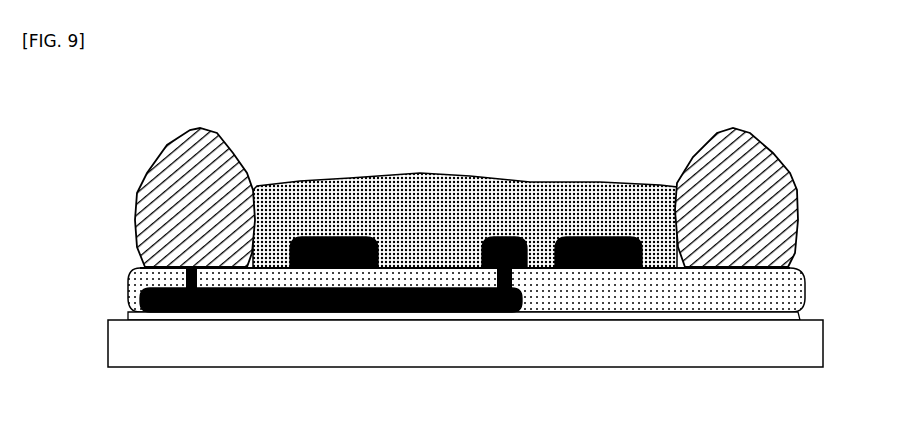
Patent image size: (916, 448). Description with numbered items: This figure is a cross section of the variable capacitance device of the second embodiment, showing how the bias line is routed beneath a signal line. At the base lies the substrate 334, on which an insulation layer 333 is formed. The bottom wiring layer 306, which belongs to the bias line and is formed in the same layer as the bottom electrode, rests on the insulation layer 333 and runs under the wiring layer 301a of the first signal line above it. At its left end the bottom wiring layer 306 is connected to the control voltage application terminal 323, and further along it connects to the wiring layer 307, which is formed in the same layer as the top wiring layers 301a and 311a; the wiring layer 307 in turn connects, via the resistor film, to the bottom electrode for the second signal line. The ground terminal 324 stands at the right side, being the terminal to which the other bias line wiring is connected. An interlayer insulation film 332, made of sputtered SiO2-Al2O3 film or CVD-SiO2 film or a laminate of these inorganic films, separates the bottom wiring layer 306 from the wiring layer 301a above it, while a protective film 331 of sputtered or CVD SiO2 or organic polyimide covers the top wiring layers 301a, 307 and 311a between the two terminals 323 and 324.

The control voltage application terminal 323 is at (162, 165).
The ground terminal 324 is at (786, 162).
The protective film 331 is at (405, 190).
The interlayer insulation film 332 is at (136, 290).
The insulation layer 333 is at (800, 318).
The substrate 334 is at (120, 347).
The top wiring layer 301a is at (330, 238).
The wiring layer 307 is at (500, 240).
The top wiring layer 311a is at (598, 236).
The bottom wiring layer 306 is at (343, 307).